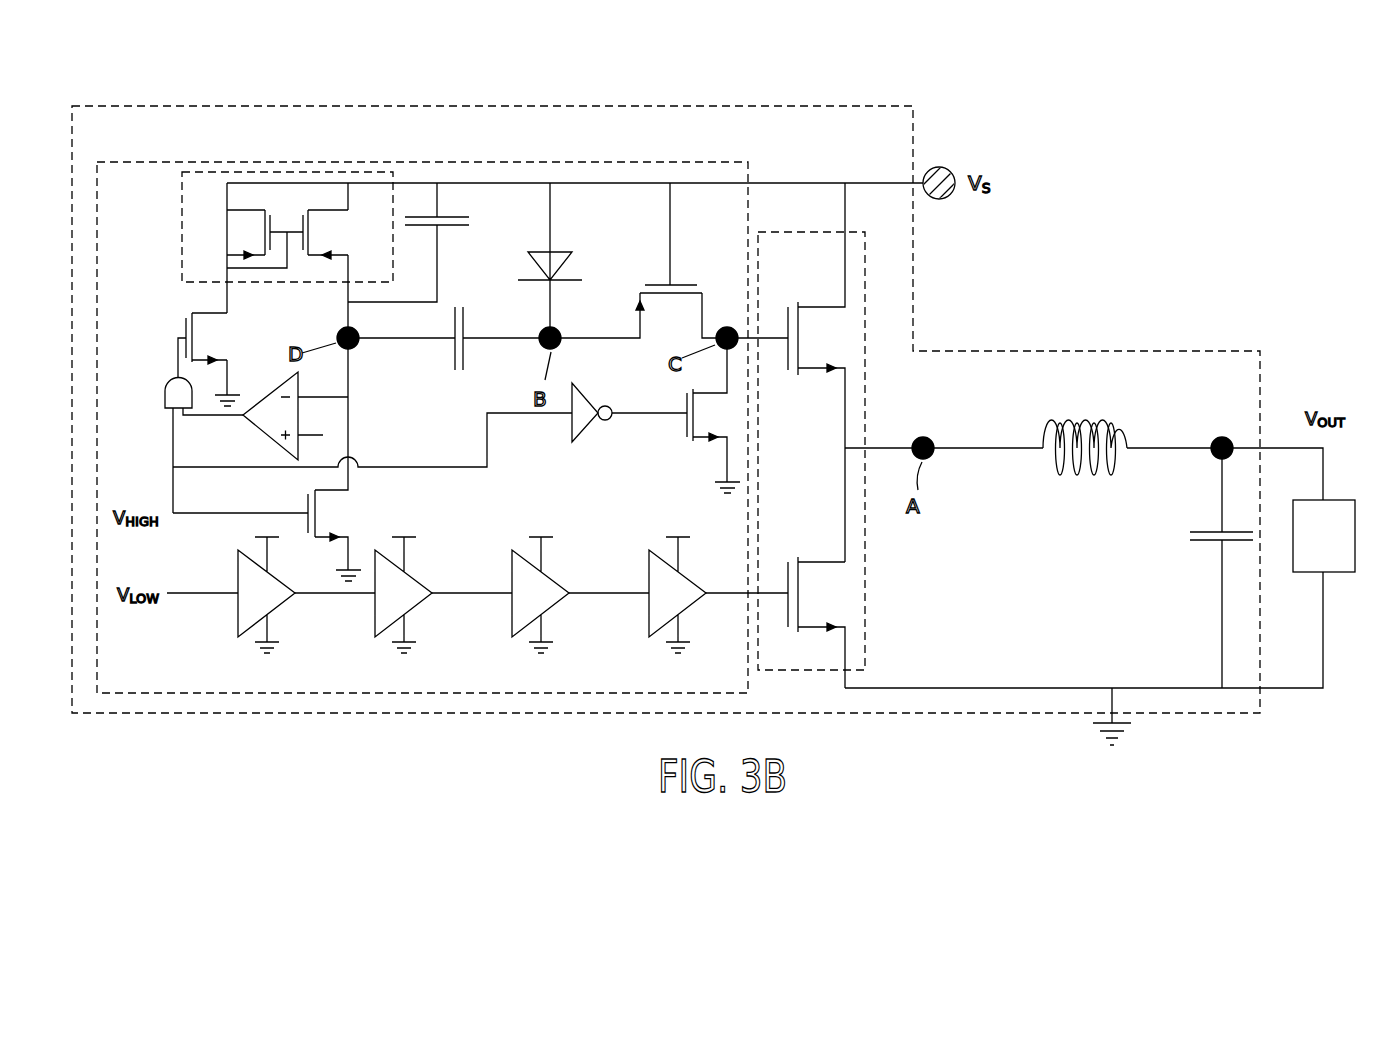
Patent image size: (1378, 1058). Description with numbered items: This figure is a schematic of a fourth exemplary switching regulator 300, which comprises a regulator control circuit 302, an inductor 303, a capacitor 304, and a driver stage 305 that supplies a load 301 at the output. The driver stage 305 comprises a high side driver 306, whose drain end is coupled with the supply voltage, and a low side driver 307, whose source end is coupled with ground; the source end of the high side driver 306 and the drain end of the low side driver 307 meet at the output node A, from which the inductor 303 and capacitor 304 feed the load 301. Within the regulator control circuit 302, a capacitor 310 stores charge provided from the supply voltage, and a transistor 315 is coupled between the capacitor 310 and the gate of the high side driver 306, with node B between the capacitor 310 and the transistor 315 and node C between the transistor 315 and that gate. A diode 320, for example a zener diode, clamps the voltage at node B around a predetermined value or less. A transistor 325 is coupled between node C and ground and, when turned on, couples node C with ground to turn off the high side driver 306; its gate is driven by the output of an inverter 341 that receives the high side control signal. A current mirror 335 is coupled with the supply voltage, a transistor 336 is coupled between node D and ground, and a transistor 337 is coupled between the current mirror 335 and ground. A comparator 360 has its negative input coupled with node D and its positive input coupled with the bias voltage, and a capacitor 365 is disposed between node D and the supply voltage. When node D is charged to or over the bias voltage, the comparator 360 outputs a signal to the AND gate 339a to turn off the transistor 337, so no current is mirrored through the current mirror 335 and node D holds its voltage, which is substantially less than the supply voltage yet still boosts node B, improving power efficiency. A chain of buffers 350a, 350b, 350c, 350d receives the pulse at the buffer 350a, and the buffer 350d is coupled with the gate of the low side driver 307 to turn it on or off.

The switching regulator 300 is at (915, 130).
The load 301 is at (1343, 498).
The regulator control circuit 302 is at (751, 172).
The inductor 303 is at (1134, 435).
The capacitor 304 is at (1192, 549).
The driver stage 305 is at (867, 393).
The high side driver 306 is at (814, 299).
The low side driver 307 is at (814, 555).
The capacitor 310 is at (471, 327).
The transistor 315 is at (709, 326).
The diode 320 is at (521, 265).
The transistor 325 is at (677, 426).
The current mirror 335 is at (338, 172).
The transistor 336 is at (352, 510).
The transistor 337 is at (180, 316).
The AND gate 339a is at (166, 377).
The inverter 341 is at (561, 426).
The buffer 350a is at (233, 581).
The buffer 350b is at (412, 570).
The buffer 350c is at (549, 570).
The buffer 350d is at (686, 570).
The comparator 360 is at (272, 381).
The capacitor 365 is at (447, 207).